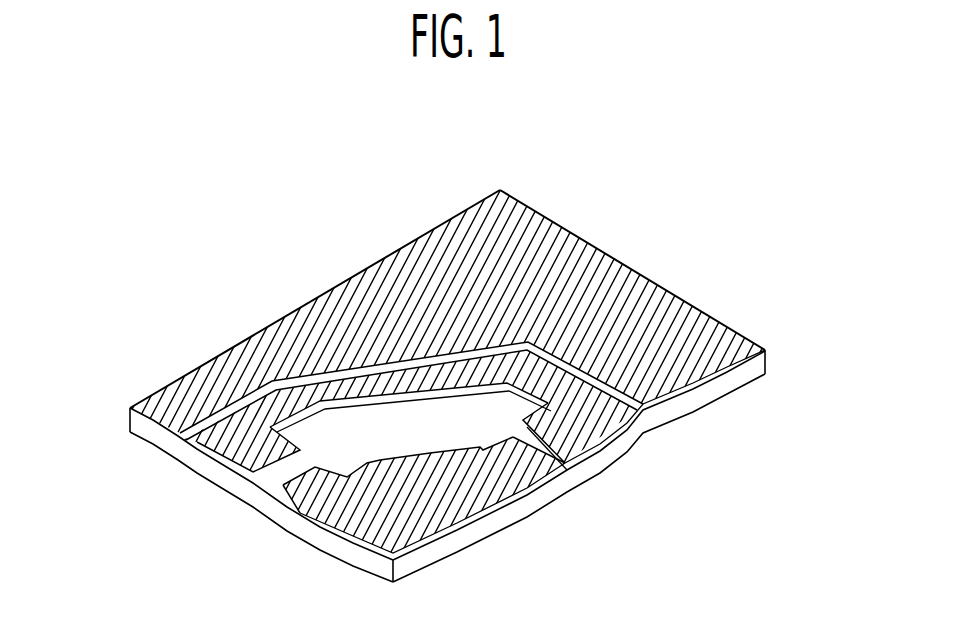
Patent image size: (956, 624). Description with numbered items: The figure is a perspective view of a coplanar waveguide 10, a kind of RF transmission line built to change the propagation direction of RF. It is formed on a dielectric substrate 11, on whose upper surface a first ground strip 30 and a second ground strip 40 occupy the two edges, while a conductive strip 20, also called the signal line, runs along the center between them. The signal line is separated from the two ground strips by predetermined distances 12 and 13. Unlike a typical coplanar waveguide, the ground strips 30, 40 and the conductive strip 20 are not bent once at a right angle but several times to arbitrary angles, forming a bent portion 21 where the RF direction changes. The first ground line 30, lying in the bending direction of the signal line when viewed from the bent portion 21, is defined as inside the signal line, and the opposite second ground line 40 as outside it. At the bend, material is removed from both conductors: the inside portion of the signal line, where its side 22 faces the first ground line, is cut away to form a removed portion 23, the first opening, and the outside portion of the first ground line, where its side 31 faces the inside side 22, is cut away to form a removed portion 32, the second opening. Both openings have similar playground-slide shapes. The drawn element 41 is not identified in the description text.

The coplanar waveguide 10 is at (227, 139).
The dielectric substrate 11 is at (750, 373).
The predetermined distance 12 is at (648, 412).
The predetermined distance 13 is at (560, 466).
The conductive strip 20 is at (203, 447).
The bent portion 21 is at (460, 378).
The side of the signal line 22 is at (364, 425).
The removed portion 23 is at (400, 393).
The first ground strip 30 is at (347, 510).
The side of the first ground line 31 is at (433, 463).
The removed portion 32 is at (435, 442).
The second ground strip 40 is at (197, 386).
The top surface right region 41 is at (428, 343).